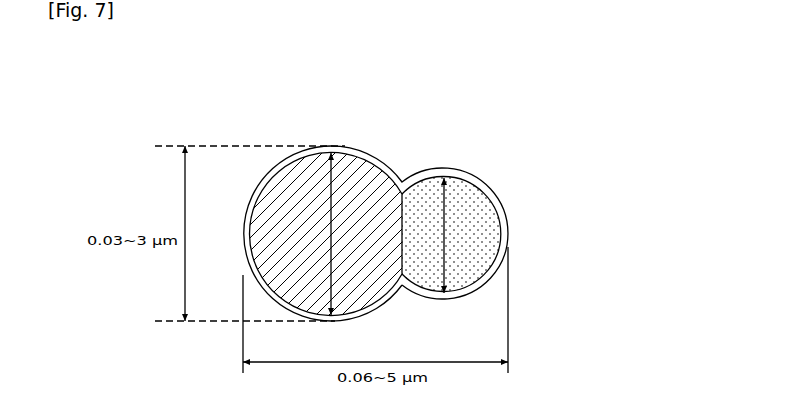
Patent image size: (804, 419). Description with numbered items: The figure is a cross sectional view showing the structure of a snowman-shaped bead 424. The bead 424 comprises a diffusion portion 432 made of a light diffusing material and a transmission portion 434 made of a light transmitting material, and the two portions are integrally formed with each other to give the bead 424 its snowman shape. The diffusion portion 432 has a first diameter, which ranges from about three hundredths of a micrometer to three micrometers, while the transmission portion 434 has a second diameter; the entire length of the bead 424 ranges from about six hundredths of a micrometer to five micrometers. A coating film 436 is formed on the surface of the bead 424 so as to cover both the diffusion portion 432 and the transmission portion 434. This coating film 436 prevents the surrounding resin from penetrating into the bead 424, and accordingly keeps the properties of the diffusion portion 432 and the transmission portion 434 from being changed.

The bead 424 is at (448, 80).
The diffusion portion 432 is at (287, 273).
The transmission portion 434 is at (475, 252).
The coating film 436 is at (470, 173).